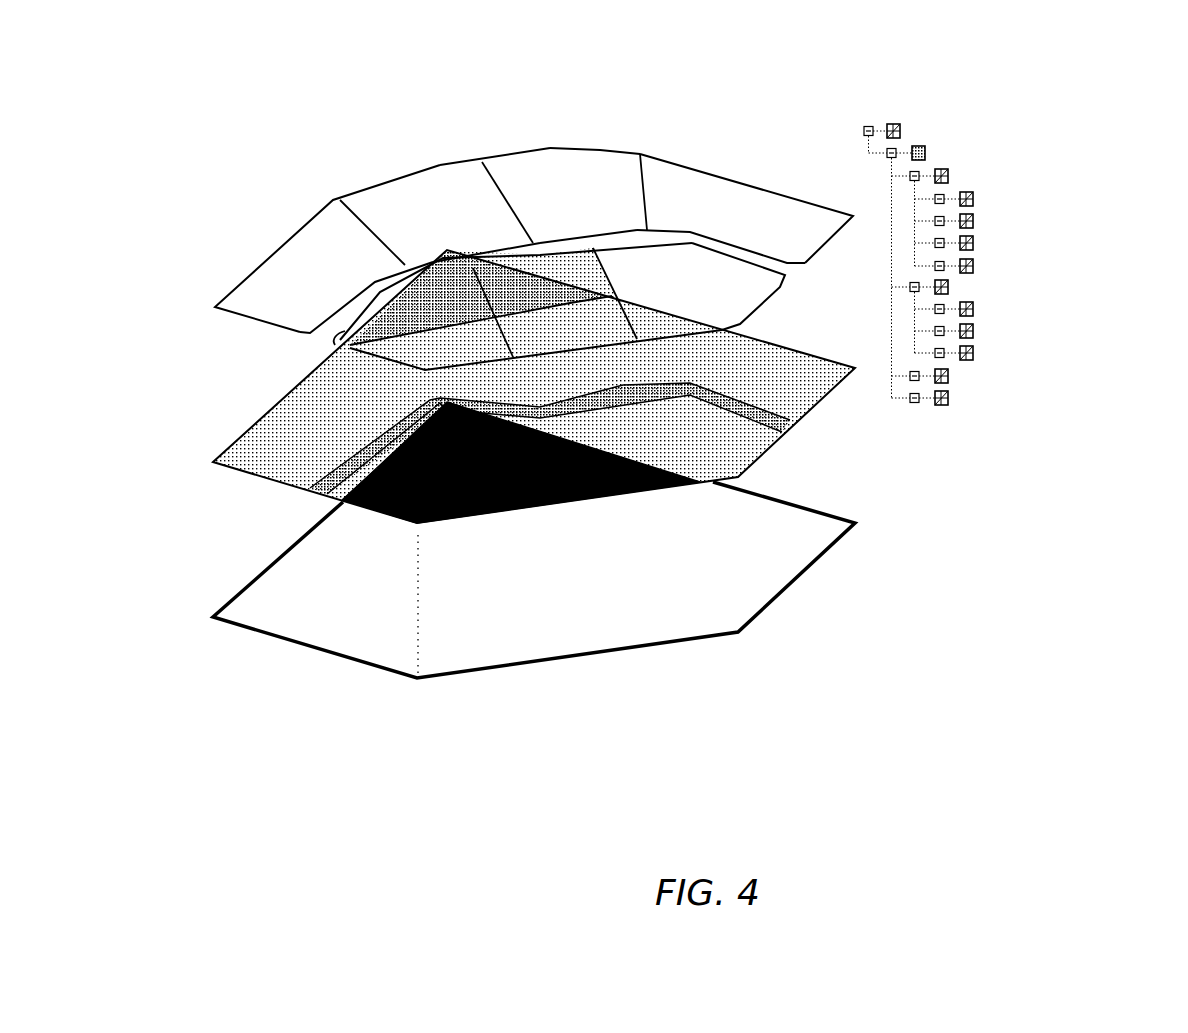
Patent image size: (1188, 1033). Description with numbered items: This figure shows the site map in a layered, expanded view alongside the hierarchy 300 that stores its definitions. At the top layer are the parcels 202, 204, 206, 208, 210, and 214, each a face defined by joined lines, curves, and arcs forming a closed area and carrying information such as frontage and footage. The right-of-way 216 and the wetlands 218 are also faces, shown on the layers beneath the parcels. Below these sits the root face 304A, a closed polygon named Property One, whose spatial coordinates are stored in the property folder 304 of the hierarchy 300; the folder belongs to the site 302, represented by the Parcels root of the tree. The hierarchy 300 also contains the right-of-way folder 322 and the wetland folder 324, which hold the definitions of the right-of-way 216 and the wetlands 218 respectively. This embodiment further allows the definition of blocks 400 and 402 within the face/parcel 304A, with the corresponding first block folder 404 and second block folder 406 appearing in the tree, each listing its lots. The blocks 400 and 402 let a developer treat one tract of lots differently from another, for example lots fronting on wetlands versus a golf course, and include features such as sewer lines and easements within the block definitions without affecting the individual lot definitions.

The parcel 202 is at (290, 260).
The parcel 204 is at (428, 203).
The parcel 206 is at (552, 188).
The parcel 208 is at (707, 197).
The parcel 210 is at (755, 290).
The parcel 214 is at (345, 337).
The right-of-way 216 is at (790, 422).
The wetlands 218 is at (340, 333).
The hierarchy 300 is at (1024, 274).
The site 302 is at (892, 117).
The root face folder 304 is at (1015, 152).
The root face 304A is at (682, 587).
The Right-of-way 1 folder 322 is at (1070, 375).
The Wetland 1 folder 324 is at (1047, 402).
The block 400 is at (785, 375).
The block 402 is at (762, 443).
The Block 1 folder 404 is at (1022, 175).
The Block 2 folder 406 is at (1025, 283).